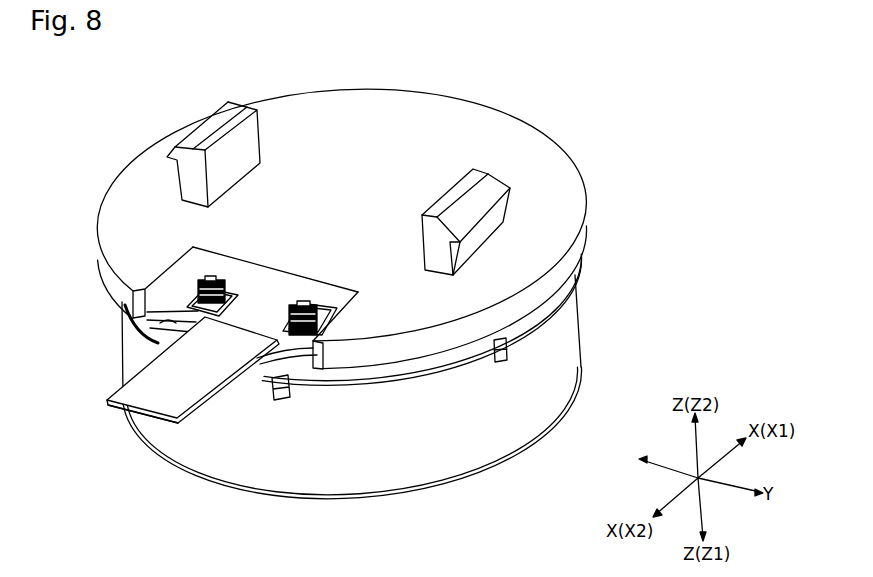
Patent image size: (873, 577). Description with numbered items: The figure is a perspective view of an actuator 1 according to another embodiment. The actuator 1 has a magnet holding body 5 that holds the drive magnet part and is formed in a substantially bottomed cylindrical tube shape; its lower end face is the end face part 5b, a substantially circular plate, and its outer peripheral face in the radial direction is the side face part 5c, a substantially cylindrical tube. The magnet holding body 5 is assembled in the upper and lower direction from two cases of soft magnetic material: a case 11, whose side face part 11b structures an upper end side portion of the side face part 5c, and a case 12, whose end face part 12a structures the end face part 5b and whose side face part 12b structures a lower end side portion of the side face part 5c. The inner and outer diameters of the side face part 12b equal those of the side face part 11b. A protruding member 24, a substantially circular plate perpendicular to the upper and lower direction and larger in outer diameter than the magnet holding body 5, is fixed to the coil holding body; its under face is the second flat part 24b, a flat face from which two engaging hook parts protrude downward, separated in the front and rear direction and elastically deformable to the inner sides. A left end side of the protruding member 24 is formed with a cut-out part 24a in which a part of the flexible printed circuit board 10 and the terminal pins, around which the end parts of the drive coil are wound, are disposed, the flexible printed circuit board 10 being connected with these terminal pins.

The actuator 1 is at (631, 108).
The magnet holding body 5 is at (343, 531).
The end face part 5b is at (126, 302).
The side face part 5c is at (415, 447).
The flexible printed circuit board 10 is at (118, 412).
The case 11 is at (252, 489).
The side face part 11b is at (211, 480).
The case 12 is at (342, 395).
The end face part 12a is at (115, 326).
The side face part 12b is at (462, 358).
The protruding member 24 is at (374, 90).
The cut-out part 24a is at (163, 280).
The second flat part 24b is at (379, 174).